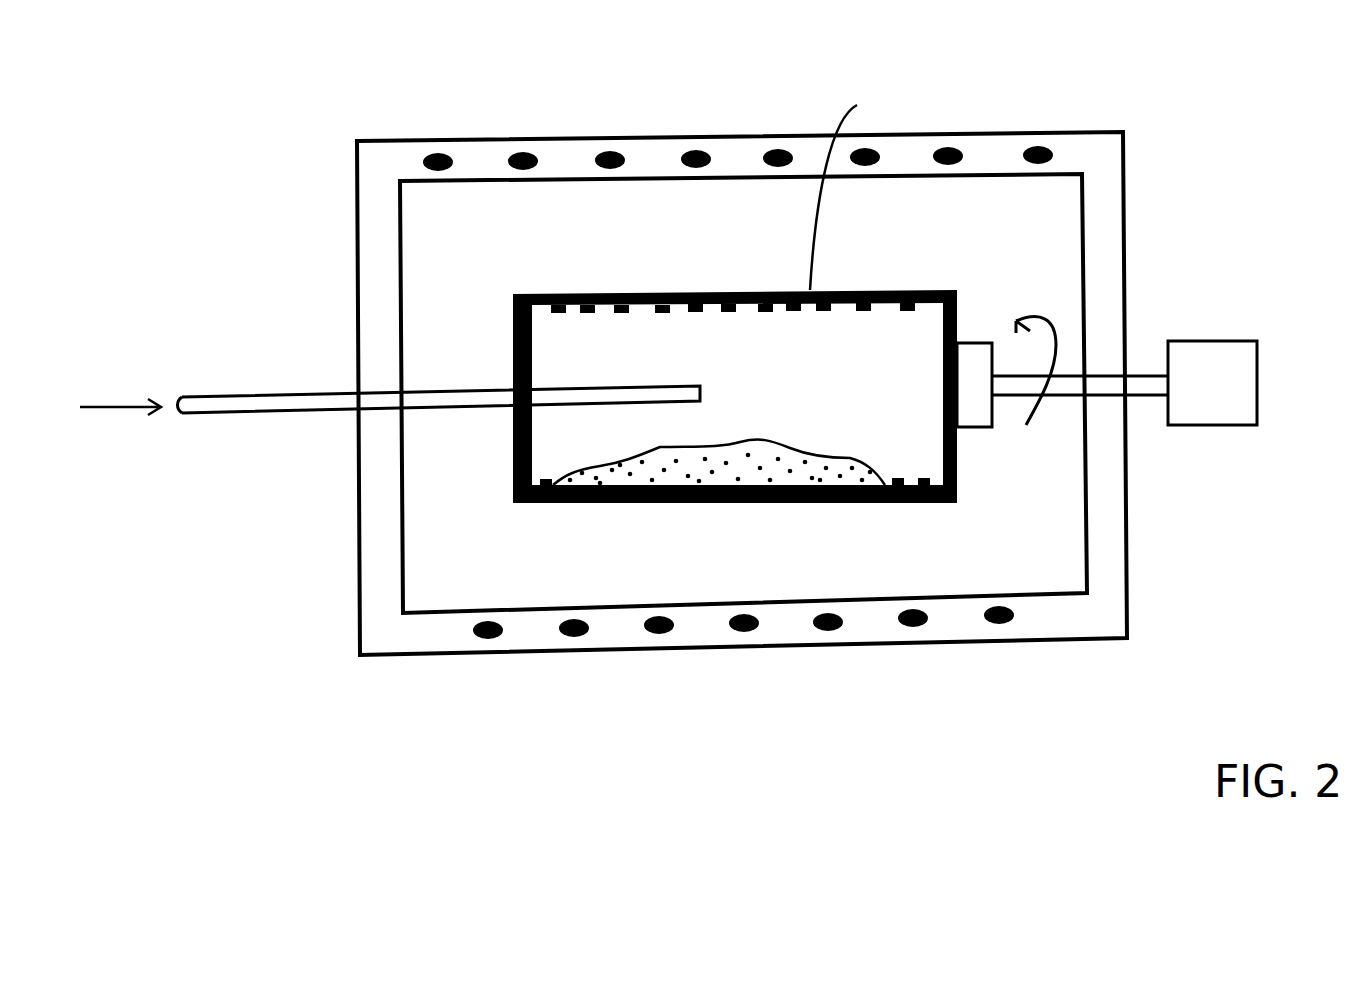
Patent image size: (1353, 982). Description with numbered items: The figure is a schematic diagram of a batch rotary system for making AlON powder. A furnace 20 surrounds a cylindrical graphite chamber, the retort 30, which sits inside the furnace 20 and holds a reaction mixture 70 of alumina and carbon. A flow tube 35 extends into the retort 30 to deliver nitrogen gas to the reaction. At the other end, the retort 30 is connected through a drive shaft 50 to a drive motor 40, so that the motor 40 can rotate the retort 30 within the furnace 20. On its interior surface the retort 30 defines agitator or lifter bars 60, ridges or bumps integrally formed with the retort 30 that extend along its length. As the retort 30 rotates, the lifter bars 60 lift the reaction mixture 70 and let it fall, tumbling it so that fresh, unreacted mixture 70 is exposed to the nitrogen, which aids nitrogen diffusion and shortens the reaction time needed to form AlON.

The furnace 20 is at (1042, 630).
The retort 30 is at (857, 187).
The flow tube 35 is at (278, 397).
The drive motor 40 is at (1250, 381).
The drive shaft 50 is at (1168, 372).
The lifter bars 60 is at (513, 296).
The reaction mixture 70 is at (880, 470).